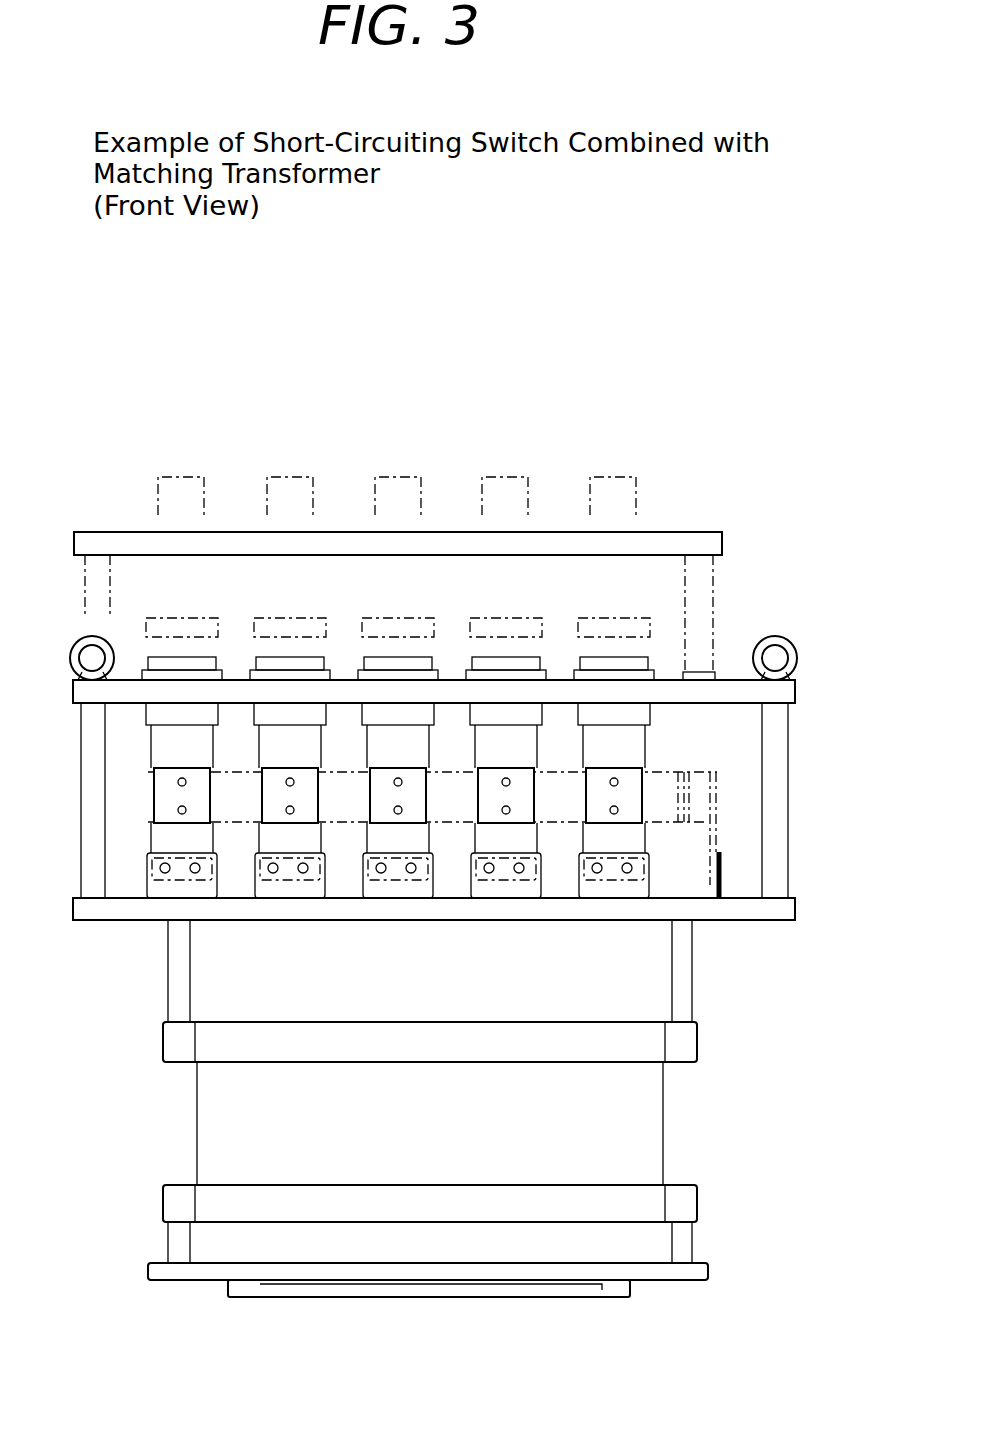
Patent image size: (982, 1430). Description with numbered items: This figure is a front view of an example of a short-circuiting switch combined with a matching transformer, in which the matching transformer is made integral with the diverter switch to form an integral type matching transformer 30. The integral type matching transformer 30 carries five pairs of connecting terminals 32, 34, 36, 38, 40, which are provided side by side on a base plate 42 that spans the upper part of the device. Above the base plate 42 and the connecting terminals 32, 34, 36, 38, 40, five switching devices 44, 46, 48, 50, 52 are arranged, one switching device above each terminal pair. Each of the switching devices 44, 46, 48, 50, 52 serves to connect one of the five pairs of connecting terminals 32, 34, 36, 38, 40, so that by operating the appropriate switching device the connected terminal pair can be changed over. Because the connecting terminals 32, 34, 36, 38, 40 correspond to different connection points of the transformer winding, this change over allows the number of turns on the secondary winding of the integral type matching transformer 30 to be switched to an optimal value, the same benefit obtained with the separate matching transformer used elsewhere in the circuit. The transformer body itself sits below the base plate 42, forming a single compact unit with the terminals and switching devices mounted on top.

The integral type matching transformer 30 is at (733, 581).
The connecting terminal pair 32 is at (210, 657).
The connecting terminal pair 34 is at (318, 657).
The connecting terminal pair 36 is at (425, 657).
The connecting terminal pair 38 is at (533, 657).
The connecting terminal pair 40 is at (643, 657).
The base plate 42 is at (780, 692).
The switching device 44 is at (181, 473).
The switching device 46 is at (291, 473).
The switching device 48 is at (400, 473).
The switching device 50 is at (506, 473).
The switching device 52 is at (614, 473).